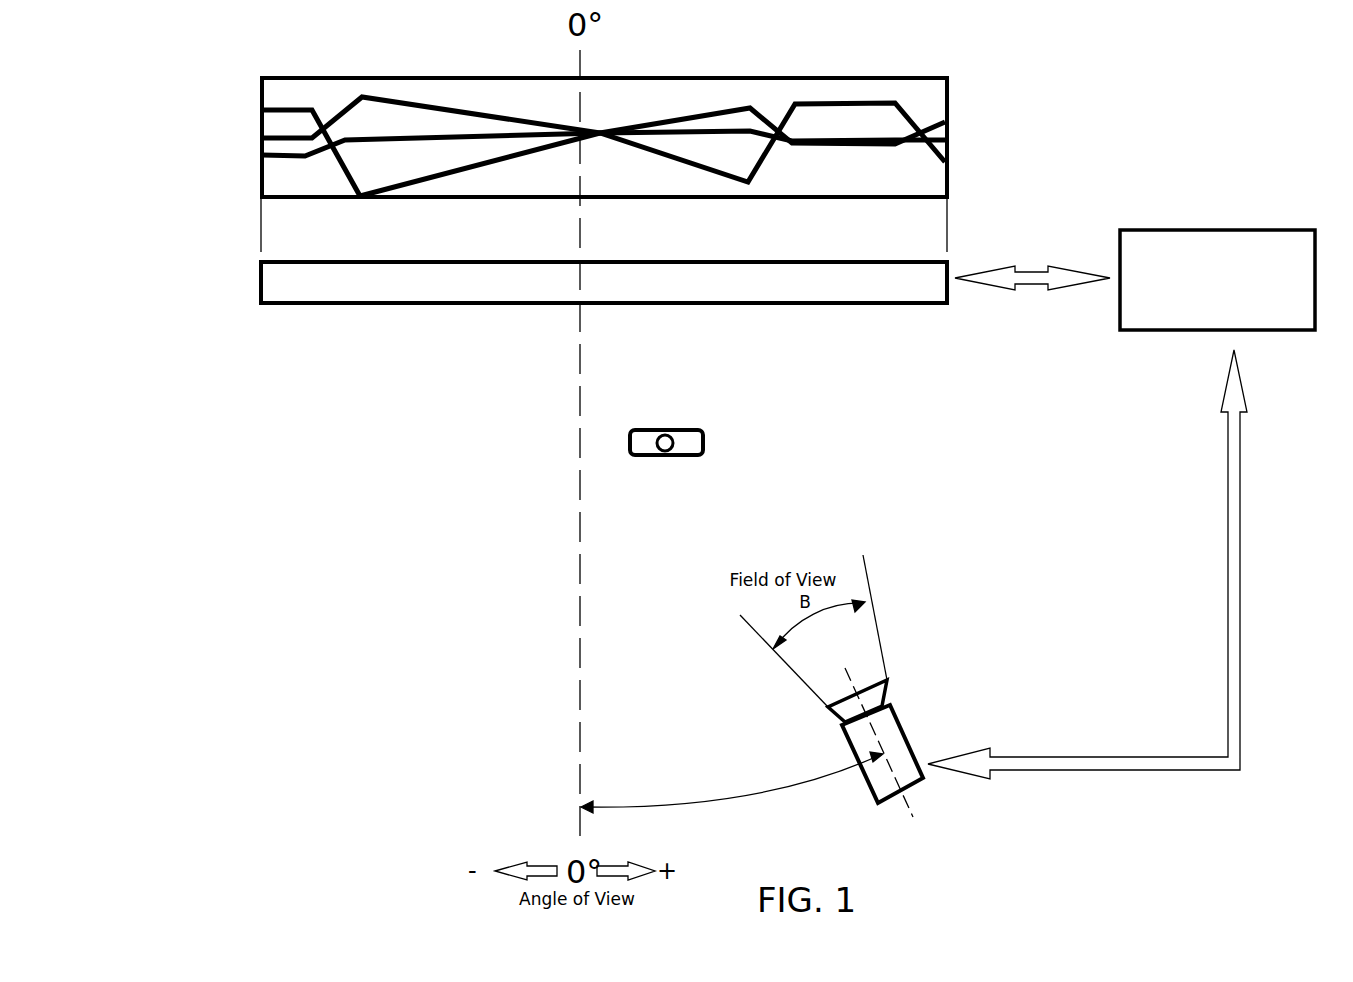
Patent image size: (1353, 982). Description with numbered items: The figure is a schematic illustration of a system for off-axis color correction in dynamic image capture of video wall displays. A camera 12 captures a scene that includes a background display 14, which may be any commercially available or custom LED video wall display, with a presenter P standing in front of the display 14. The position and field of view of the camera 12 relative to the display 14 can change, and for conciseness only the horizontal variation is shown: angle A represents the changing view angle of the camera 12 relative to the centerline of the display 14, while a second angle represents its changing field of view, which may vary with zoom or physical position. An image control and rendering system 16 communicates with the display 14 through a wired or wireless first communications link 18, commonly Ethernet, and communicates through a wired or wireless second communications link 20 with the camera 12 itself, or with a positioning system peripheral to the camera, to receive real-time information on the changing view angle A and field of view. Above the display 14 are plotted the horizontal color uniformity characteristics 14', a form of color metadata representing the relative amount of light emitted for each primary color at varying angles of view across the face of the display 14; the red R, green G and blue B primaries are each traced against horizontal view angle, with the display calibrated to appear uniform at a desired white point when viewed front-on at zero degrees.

The camera 12 is at (925, 765).
The display 14 is at (604, 337).
The horizontal color uniformity characteristics 14' is at (652, 154).
The image control and rendering system 16 is at (1232, 230).
The communications link 18 is at (1035, 290).
The communications link 20 is at (1228, 575).
The presenter P is at (703, 440).
The red primary color characteristic R is at (256, 111).
The green primary color characteristic G is at (256, 138).
The blue primary color characteristic B is at (256, 155).
The view angle A is at (732, 785).